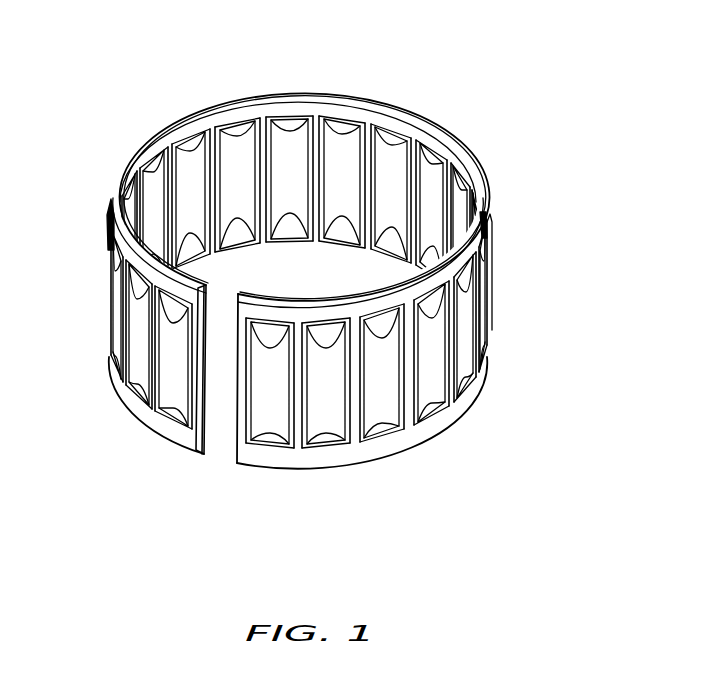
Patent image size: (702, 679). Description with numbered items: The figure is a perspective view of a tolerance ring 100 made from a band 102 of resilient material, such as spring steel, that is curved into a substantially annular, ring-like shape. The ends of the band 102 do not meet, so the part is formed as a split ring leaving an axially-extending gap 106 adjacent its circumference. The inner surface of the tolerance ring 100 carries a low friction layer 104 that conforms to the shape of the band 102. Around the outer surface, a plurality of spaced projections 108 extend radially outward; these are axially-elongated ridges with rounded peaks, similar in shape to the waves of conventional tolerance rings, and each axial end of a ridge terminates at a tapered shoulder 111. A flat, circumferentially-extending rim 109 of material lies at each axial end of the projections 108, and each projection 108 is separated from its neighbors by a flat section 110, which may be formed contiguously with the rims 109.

The tolerance ring 100 is at (520, 103).
The band 102 is at (407, 113).
The low friction layer 104 is at (333, 101).
The gap 106 is at (227, 444).
The projections 108 is at (466, 243).
The rim 109 is at (158, 421).
The flat section 110 is at (299, 424).
The tapered shoulder 111 is at (267, 336).